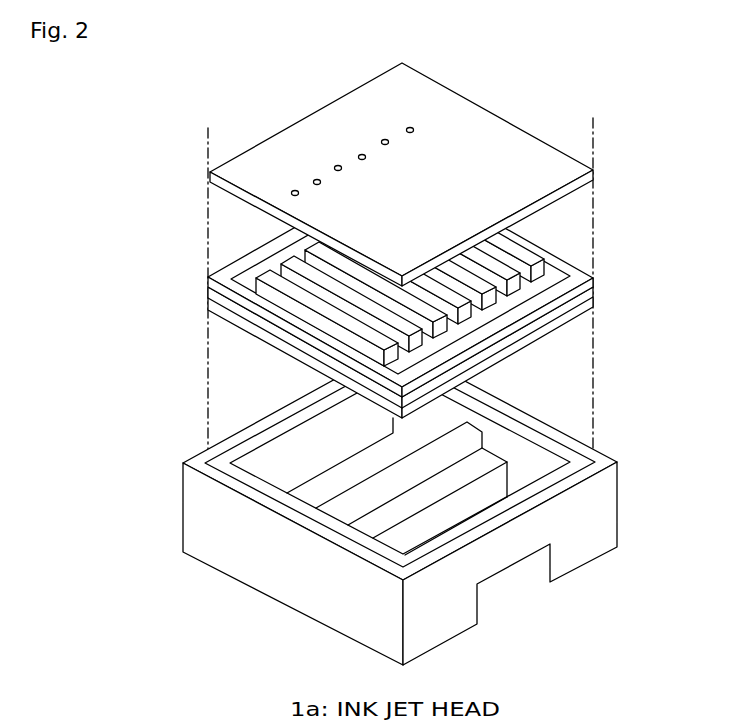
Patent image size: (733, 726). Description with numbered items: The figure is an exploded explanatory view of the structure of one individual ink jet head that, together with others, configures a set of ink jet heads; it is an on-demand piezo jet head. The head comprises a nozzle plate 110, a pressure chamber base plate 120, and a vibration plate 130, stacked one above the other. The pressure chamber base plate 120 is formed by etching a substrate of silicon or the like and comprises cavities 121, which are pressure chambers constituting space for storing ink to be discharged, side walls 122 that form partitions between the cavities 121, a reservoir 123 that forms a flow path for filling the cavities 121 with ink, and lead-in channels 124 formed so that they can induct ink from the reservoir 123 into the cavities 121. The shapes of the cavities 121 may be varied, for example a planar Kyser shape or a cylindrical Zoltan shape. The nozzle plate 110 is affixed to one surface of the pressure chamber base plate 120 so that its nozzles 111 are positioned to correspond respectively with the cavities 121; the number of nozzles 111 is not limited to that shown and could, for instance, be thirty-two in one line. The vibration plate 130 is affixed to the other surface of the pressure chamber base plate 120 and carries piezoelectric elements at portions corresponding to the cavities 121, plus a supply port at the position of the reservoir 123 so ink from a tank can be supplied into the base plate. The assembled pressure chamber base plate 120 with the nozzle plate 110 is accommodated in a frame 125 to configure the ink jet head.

The nozzle plate 110 is at (401, 167).
The nozzles 111 is at (437, 113).
The pressure chamber base plate 120 is at (595, 288).
The cavities 121 is at (318, 302).
The side walls 122 is at (313, 321).
The reservoir 123 is at (562, 272).
The lead-in channels 124 is at (558, 240).
The frame 125 is at (614, 461).
The vibration plate 130 is at (573, 318).